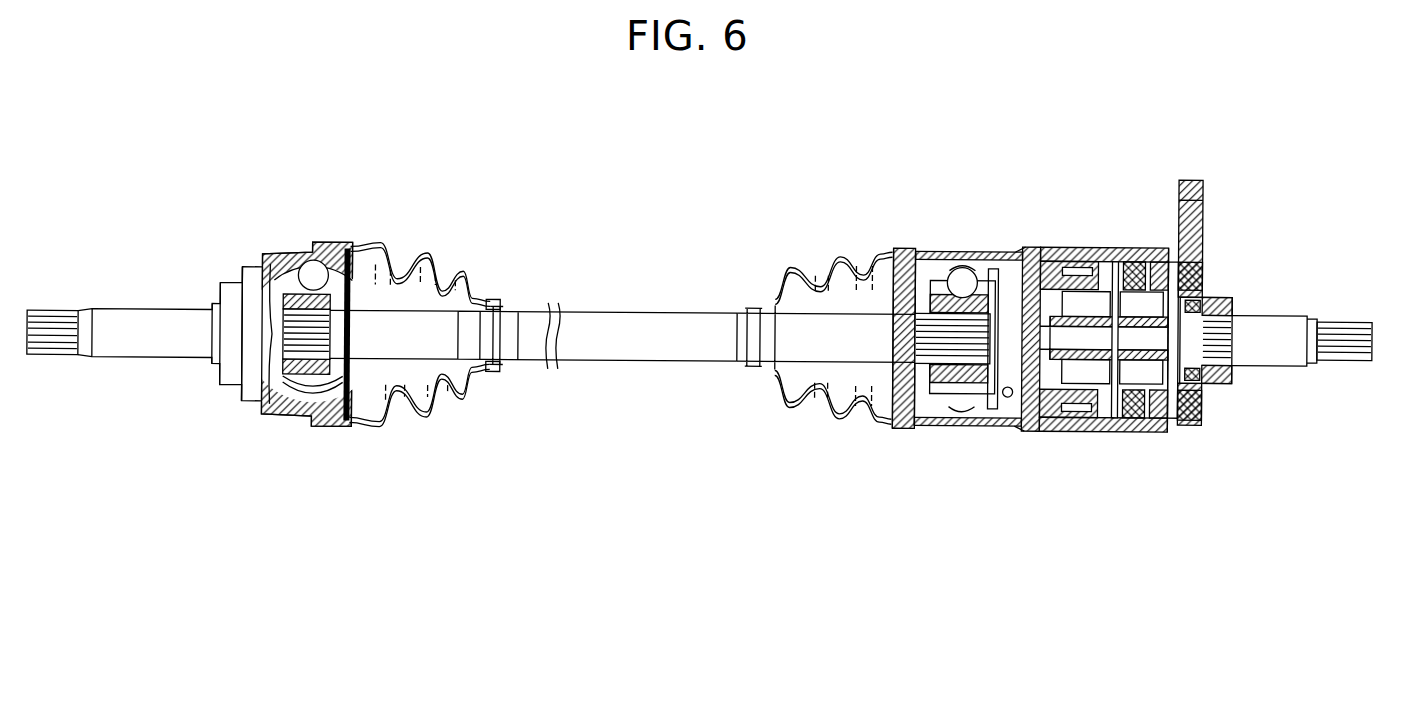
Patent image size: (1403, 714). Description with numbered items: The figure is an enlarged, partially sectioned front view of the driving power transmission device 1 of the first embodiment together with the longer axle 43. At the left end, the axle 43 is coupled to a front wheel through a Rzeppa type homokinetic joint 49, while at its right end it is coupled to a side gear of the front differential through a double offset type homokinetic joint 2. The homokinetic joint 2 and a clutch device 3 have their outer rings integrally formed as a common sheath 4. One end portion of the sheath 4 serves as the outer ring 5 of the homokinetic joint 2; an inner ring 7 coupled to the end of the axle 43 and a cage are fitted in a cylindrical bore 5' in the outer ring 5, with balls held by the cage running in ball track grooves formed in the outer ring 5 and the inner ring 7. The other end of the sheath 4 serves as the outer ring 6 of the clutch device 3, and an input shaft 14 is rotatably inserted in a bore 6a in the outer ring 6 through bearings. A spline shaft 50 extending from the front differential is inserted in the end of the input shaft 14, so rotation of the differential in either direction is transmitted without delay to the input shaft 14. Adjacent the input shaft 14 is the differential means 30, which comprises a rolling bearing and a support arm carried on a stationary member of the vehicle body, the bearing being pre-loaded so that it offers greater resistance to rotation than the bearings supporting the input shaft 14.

The driving power transmission device 1 is at (1104, 297).
The double offset type homokinetic joint 2 is at (959, 299).
The clutch device 3 is at (1091, 227).
The sheath 4 is at (1034, 371).
The outer ring 5 is at (973, 381).
The cylindrical bore 5' is at (1005, 465).
The outer ring 6 is at (1103, 393).
The bore 6a is at (1070, 465).
The inner ring 7 is at (953, 394).
The input shaft 14 is at (1223, 391).
The differential means 30 is at (1233, 303).
The axle 43 is at (598, 305).
The homokinetic joint 49 is at (309, 297).
The spline shaft 50 is at (1301, 384).